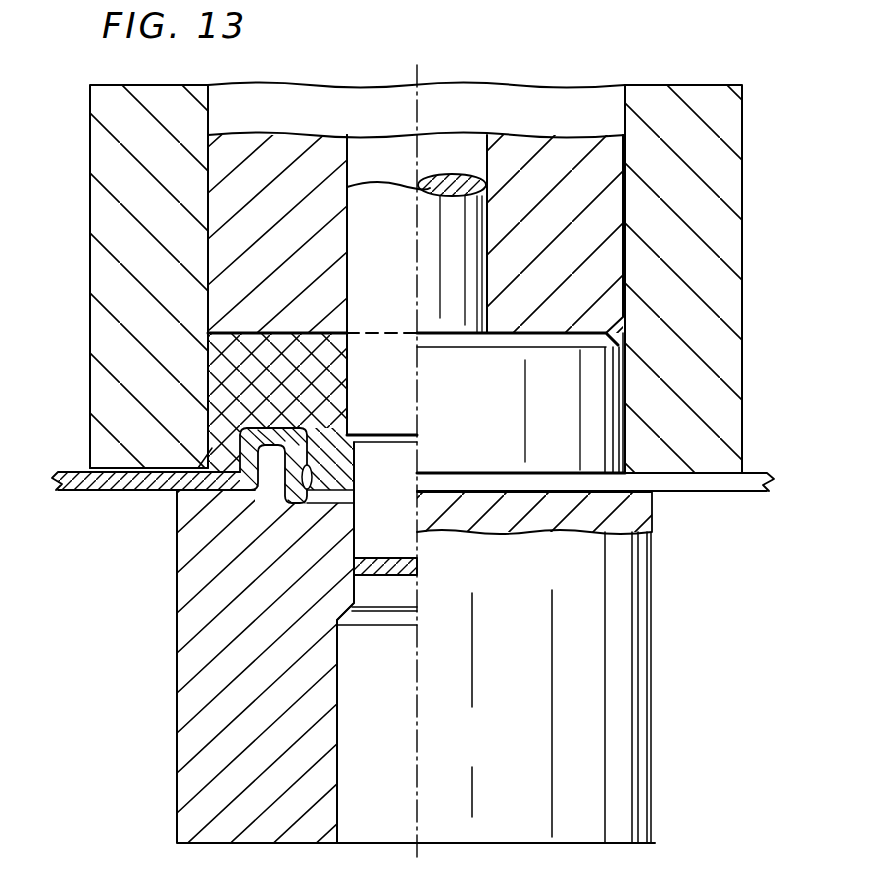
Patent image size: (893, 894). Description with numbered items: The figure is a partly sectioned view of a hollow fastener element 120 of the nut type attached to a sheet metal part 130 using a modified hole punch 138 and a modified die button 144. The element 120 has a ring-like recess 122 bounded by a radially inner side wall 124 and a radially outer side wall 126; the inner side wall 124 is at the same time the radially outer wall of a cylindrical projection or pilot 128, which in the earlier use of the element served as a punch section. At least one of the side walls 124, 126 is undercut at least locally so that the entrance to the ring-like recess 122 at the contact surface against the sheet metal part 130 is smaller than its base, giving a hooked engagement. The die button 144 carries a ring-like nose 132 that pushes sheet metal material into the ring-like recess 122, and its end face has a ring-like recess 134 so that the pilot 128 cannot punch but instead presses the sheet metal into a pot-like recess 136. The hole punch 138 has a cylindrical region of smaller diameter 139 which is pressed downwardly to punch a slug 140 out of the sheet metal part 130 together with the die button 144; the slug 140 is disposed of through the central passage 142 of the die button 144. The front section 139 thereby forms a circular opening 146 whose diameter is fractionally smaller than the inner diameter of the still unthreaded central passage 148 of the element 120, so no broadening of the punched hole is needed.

The hollow fastener element 120 is at (207, 407).
The ring-like recess 122 is at (278, 430).
The radially inner side wall 124 is at (312, 500).
The radially outer side wall 126 is at (196, 491).
The cylindrical projection or pilot 128 is at (345, 515).
The sheet metal part 130 is at (722, 482).
The ring-like nose 132 is at (200, 520).
The ring-like recess of the die button 134 is at (510, 500).
The pot-like recess 136 is at (330, 425).
The hole punch 138 is at (457, 247).
The cylindrical region of smaller diameter 139 is at (408, 462).
The slug 140 is at (352, 598).
The central passage of the die button 142 is at (349, 740).
The die button 144 is at (653, 705).
The circular opening 146 is at (355, 502).
The central passage of the hollow fastener element 148 is at (350, 353).